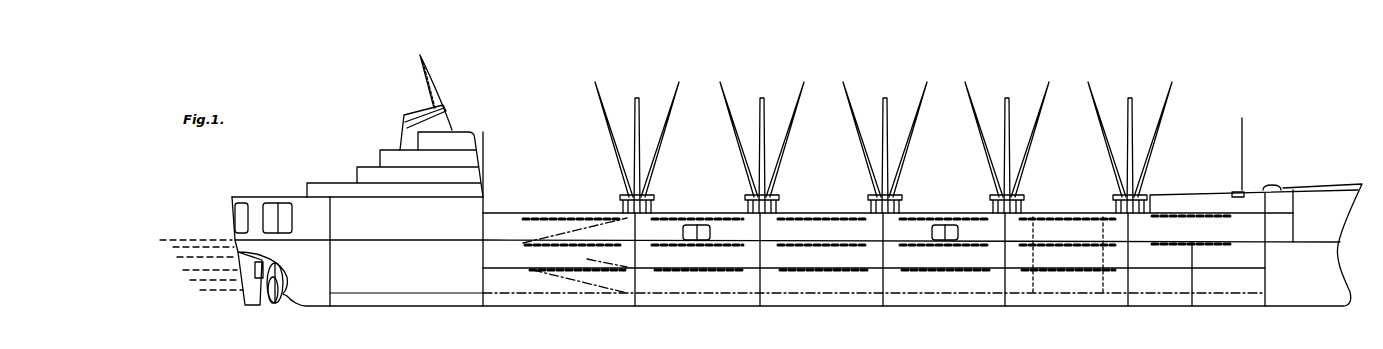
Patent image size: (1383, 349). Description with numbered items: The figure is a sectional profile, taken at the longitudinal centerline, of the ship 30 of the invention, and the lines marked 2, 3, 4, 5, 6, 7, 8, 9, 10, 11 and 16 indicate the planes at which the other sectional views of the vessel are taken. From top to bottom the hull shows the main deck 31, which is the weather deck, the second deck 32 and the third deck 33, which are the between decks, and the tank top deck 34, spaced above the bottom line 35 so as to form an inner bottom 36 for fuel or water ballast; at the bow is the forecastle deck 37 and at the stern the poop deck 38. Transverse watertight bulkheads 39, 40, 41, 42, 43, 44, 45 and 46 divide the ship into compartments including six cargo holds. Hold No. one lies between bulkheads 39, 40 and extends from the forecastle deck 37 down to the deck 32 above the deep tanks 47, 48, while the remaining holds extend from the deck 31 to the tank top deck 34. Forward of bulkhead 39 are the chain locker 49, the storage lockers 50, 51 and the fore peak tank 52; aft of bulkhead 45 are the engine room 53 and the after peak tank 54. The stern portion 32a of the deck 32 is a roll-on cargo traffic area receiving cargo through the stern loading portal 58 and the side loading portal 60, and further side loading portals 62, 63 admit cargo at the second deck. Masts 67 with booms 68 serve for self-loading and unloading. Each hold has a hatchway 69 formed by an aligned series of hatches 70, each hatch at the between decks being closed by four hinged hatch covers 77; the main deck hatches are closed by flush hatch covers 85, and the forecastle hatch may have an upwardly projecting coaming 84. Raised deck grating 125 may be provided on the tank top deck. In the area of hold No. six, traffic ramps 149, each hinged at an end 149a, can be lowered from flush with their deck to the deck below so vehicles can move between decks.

The section line 2- 2 is at (222, 212).
The section line 3- 3 is at (187, 240).
The section line 4- 4 is at (197, 267).
The section line 5- 5 is at (202, 293).
The section line 6- 6 is at (602, 208).
The section line 7- 7 is at (675, 208).
The section line 8- 8 is at (847, 208).
The section line 9- 9 is at (923, 208).
The section line 10- 10 is at (1087, 207).
The section line 11- 11 is at (1215, 183).
The section line 16- 16 is at (820, 208).
The ship 30 is at (528, 166).
The main deck 31 is at (497, 213).
The second deck 32 is at (483, 240).
The stern portion of the second deck 32a is at (300, 233).
The third deck 33 is at (483, 262).
The tank top deck 34 is at (500, 306).
The bottom line 35 is at (415, 308).
The inner bottom 36 is at (528, 306).
The forecastle deck 37 is at (1247, 190).
The poop deck 38 is at (287, 197).
The watertight bulkhead 39 is at (1265, 278).
The watertight bulkhead 40 is at (1130, 286).
The watertight bulkhead 41 is at (1005, 296).
The watertight bulkhead 42 is at (883, 296).
The watertight bulkhead 43 is at (760, 306).
The watertight bulkhead 44 is at (635, 285).
The watertight bulkhead 45 is at (483, 276).
The watertight bulkhead 46 is at (331, 270).
The deep tank 47 is at (1150, 267).
The deep tank 48 is at (1215, 267).
The chain locker 49 is at (1270, 221).
The storage locker 50 is at (1310, 210).
The storage locker 51 is at (1305, 237).
The fore peak tank 52 is at (1290, 267).
The engine room 53 is at (393, 264).
The after peak tank 54 is at (298, 275).
The stern loading portal 58 is at (238, 202).
The side loading portal 60 is at (266, 203).
The side loading portal 62 is at (683, 232).
The side loading portal 63 is at (932, 232).
The mast 67 is at (764, 98).
The boom 68 is at (784, 142).
The hatchway 69 is at (722, 217).
The hatch 70 is at (1238, 192).
The hatch cover 77 is at (1233, 228).
The coaming 84 is at (1150, 195).
The hatch cover 85 is at (692, 217).
The raised deck grating 125 is at (733, 306).
The traffic ramp 149 is at (557, 240).
The hinged end of traffic ramp 149a is at (527, 243).